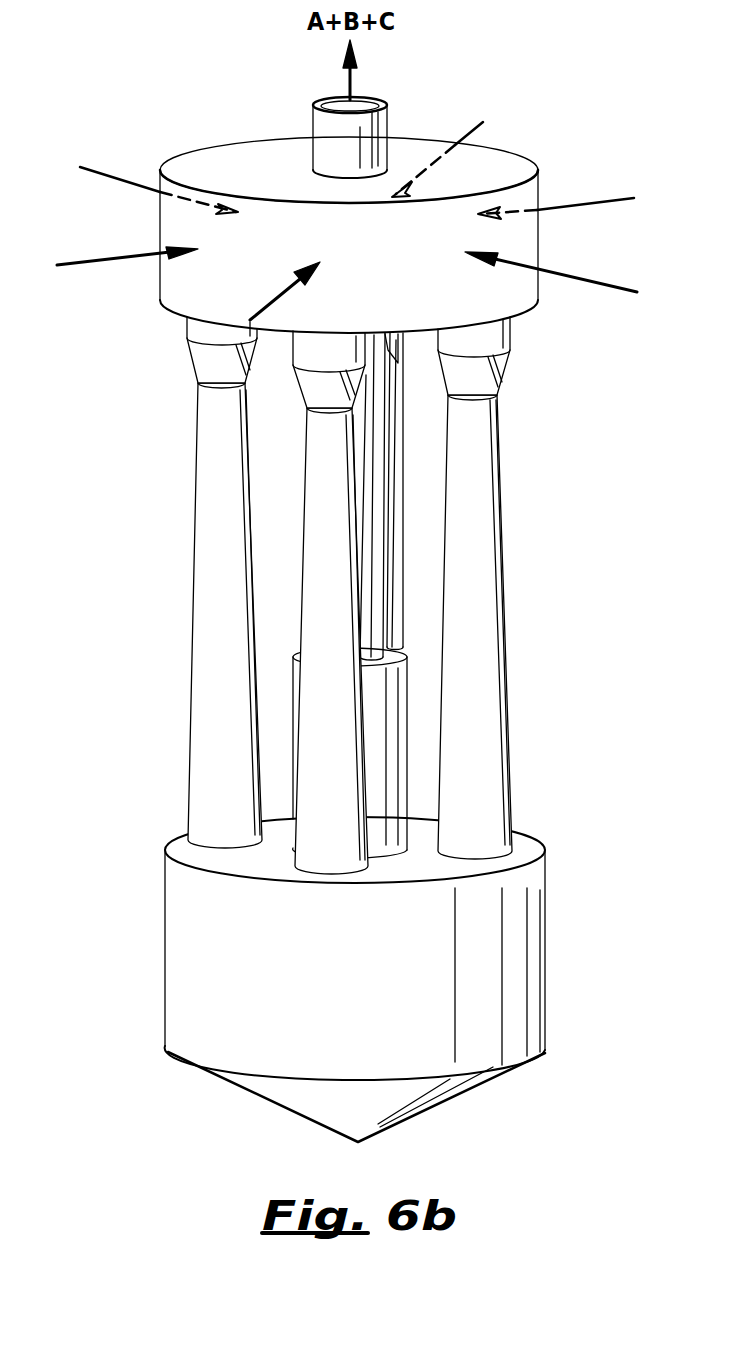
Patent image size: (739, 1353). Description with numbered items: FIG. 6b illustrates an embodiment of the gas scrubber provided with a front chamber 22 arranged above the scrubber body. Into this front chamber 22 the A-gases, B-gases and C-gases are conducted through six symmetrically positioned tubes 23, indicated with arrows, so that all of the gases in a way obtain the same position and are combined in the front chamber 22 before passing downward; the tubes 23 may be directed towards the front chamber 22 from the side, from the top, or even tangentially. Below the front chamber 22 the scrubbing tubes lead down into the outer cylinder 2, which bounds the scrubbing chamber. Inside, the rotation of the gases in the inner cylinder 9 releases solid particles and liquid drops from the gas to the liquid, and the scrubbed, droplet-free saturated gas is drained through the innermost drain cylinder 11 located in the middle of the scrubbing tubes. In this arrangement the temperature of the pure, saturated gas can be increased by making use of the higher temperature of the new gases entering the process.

The outer cylinder 2 is at (518, 934).
The inner cylinder 9 is at (407, 700).
The drain cylinder 11 is at (365, 502).
The front chamber 22 is at (251, 157).
The tubes 23 is at (478, 122).